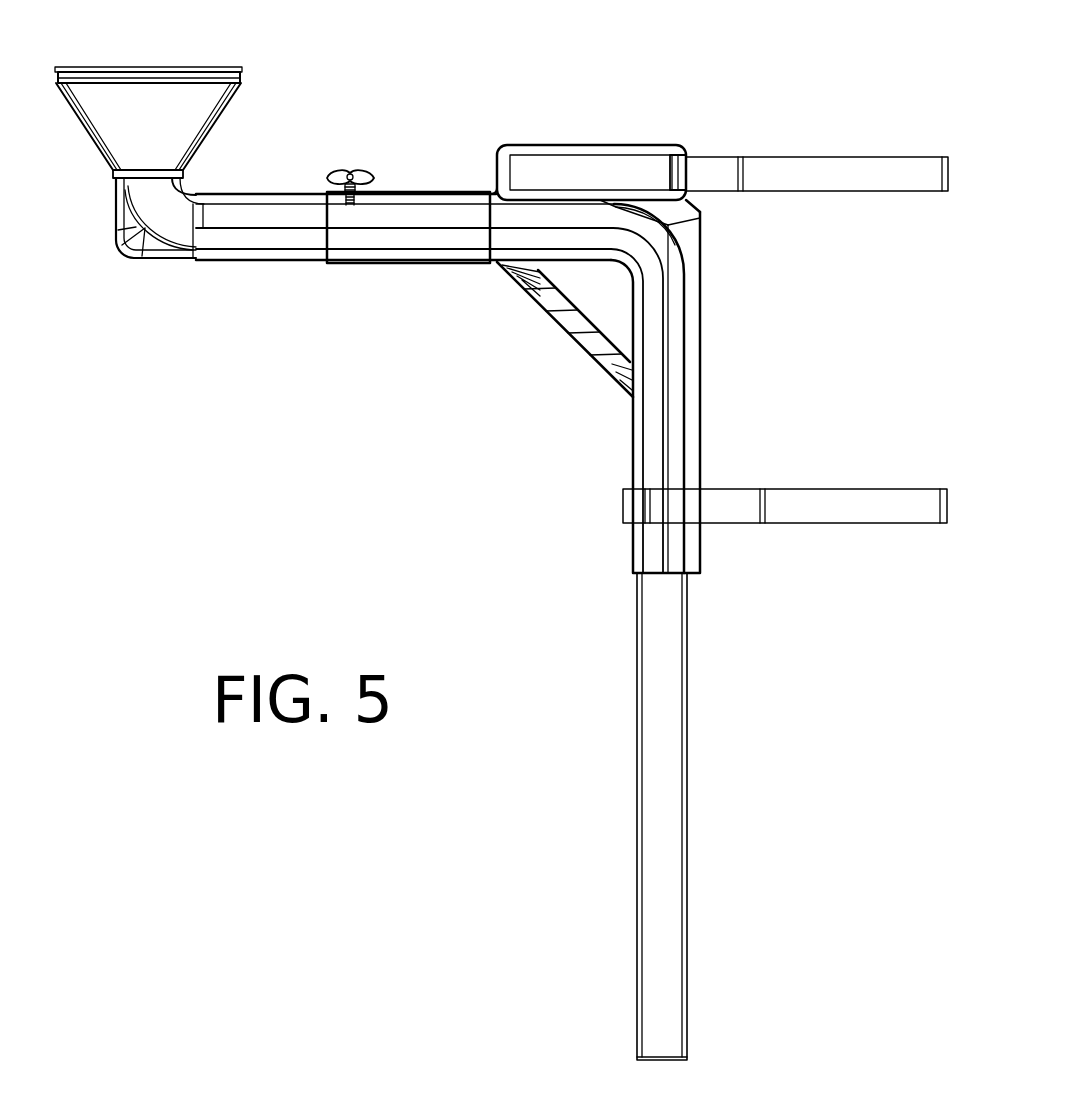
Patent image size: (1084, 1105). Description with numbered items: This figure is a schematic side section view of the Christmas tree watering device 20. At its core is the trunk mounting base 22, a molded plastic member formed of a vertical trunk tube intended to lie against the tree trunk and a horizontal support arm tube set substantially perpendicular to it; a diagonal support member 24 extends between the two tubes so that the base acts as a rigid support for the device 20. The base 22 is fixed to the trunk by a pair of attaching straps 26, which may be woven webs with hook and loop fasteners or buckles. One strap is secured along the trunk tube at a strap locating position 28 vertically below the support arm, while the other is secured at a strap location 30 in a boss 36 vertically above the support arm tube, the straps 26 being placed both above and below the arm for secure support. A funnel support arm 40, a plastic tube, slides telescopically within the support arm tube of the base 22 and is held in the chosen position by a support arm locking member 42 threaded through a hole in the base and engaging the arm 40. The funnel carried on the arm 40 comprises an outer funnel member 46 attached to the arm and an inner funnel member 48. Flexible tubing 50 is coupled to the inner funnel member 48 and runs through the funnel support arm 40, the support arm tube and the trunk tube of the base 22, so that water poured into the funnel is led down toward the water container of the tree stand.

The Christmas tree watering device 20 is at (358, 84).
The trunk mounting base 22 is at (398, 265).
The support member 24 is at (556, 325).
The attaching straps 26 is at (866, 172).
The strap locating position 28 is at (628, 468).
The strap location 30 is at (683, 151).
The boss 36 is at (613, 167).
The funnel support arm 40 is at (197, 262).
The support arm locking member 42 is at (336, 173).
The outer funnel member 46 is at (212, 127).
The inner funnel member 48 is at (85, 107).
The flexible tubing 50 is at (127, 210).